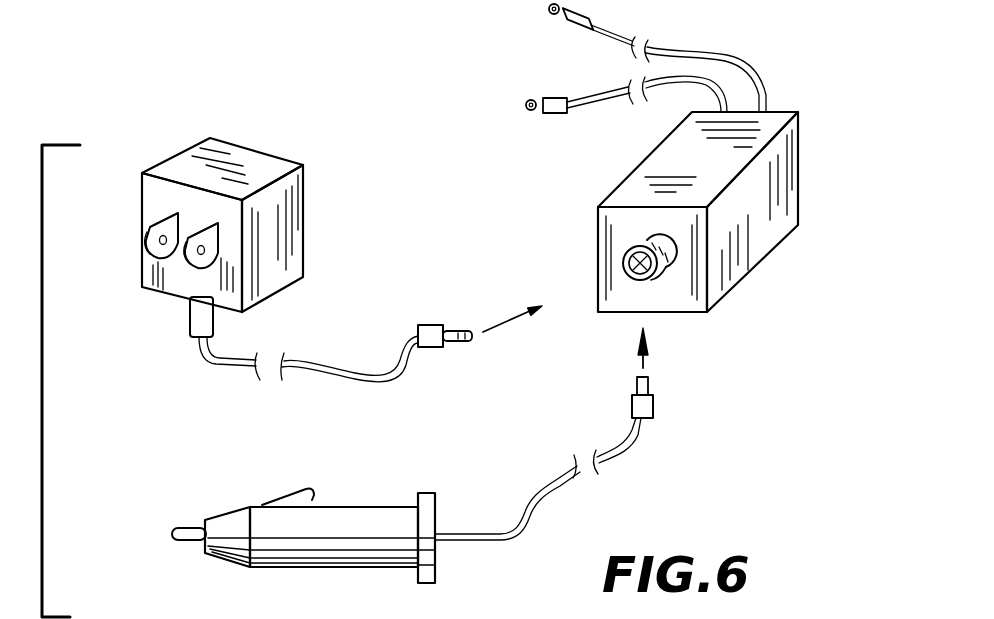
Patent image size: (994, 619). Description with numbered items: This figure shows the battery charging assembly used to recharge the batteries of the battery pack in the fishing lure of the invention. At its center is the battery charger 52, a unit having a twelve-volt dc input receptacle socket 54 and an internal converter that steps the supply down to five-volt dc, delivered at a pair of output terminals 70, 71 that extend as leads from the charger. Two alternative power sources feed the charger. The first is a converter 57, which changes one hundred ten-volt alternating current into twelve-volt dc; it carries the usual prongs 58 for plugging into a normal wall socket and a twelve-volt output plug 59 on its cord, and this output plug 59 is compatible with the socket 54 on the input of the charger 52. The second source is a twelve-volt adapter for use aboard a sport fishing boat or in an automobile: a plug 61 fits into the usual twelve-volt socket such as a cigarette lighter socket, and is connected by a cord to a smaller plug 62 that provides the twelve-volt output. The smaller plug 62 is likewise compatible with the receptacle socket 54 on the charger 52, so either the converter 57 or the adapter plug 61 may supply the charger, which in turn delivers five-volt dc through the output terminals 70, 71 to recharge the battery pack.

The battery charger 52 is at (798, 180).
The input receptacle socket 54 is at (662, 258).
The converter 57 is at (303, 215).
The prongs 58 is at (149, 223).
The output plug 59 is at (428, 325).
The plug 61 is at (373, 507).
The smaller plug 62 is at (655, 408).
The output terminal 70 is at (755, 72).
The output terminal 71 is at (693, 90).